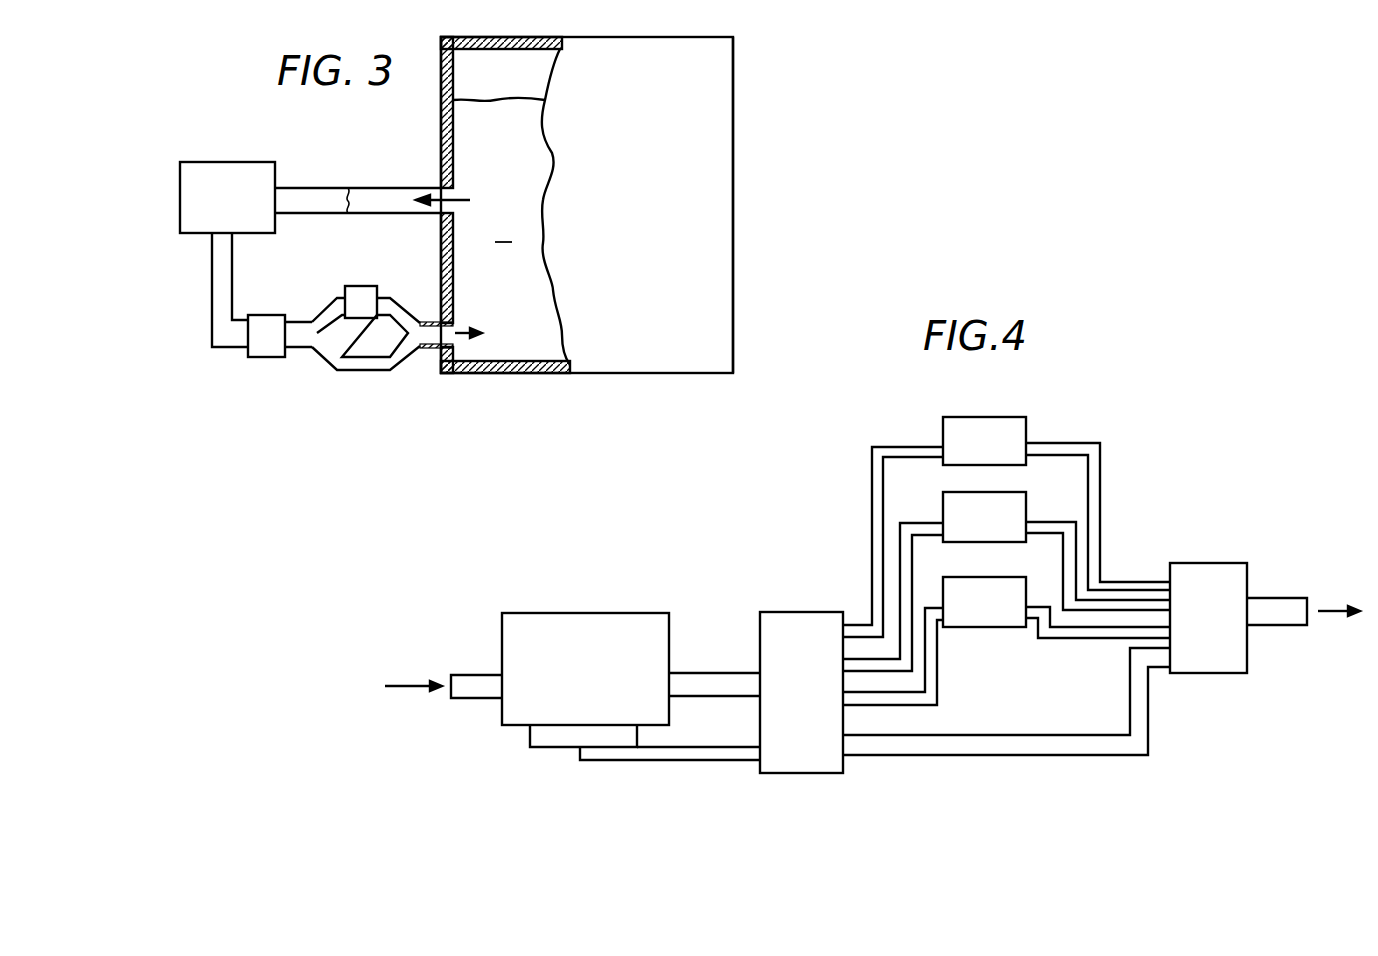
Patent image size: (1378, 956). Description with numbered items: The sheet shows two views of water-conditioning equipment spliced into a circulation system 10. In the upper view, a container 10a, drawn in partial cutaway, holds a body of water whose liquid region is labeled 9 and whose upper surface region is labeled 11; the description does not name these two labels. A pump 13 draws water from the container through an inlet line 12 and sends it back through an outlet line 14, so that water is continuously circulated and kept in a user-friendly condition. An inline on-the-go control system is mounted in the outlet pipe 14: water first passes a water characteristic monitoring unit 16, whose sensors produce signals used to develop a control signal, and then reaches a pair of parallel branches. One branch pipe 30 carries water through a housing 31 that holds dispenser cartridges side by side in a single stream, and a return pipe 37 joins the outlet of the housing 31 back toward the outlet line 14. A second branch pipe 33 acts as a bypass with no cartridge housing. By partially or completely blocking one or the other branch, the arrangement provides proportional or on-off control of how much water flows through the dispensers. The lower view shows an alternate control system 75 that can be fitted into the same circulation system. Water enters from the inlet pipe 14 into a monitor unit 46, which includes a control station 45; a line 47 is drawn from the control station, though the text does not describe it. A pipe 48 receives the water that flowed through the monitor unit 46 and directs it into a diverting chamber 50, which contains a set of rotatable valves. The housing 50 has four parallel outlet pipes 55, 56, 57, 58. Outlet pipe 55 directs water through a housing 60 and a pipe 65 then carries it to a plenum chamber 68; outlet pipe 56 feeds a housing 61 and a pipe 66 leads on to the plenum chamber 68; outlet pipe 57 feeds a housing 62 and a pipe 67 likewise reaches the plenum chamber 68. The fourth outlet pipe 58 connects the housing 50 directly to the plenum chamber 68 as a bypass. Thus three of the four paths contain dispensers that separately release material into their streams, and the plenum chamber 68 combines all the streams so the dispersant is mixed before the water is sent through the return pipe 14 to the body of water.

In FIG. 3, the liquid 9 is at (503, 230).
In FIG. 3, the system 10 is at (752, 70).
In FIG. 3, the container 10a is at (735, 210).
In FIG. 3, the liquid surface 11 is at (477, 98).
In FIG. 3, the inlet line 12 is at (322, 193).
In FIG. 3, the pump 13 is at (238, 162).
In FIG. 3, the outlet line 14 is at (226, 349).
In FIG. 4, the outlet line 14 is at (482, 700).
In FIG. 3, the water characteristic monitoring unit 16 is at (263, 360).
In FIG. 3, the branch pipe 30 is at (323, 303).
In FIG. 3, the dispensing unit housing 31 is at (367, 286).
In FIG. 3, the second branch pipe 33 is at (353, 372).
In FIG. 3, the return pipe 37 is at (403, 302).
In FIG. 4, the control station 45 is at (552, 749).
In FIG. 4, the monitor unit 46 is at (633, 612).
In FIG. 4, the control line 47 is at (640, 761).
In FIG. 4, the pipe 48 is at (712, 671).
In FIG. 4, the diverting chamber 50 is at (790, 774).
In FIG. 4, the outlet pipe 55 is at (857, 622).
In FIG. 4, the outlet pipe 56 is at (883, 672).
In FIG. 4, the outlet pipe 57 is at (905, 708).
In FIG. 4, the fourth outlet pipe 58 is at (975, 756).
In FIG. 4, the housing 60 is at (990, 418).
In FIG. 4, the housing 61 is at (1028, 502).
In FIG. 4, the housing 62 is at (990, 578).
In FIG. 4, the pipe 65 is at (1102, 496).
In FIG. 4, the pipe 66 is at (1076, 568).
In FIG. 4, the pipe 67 is at (1072, 642).
In FIG. 4, the plenum chamber 68 is at (1215, 562).
In FIG. 4, the control system 75 is at (1216, 421).